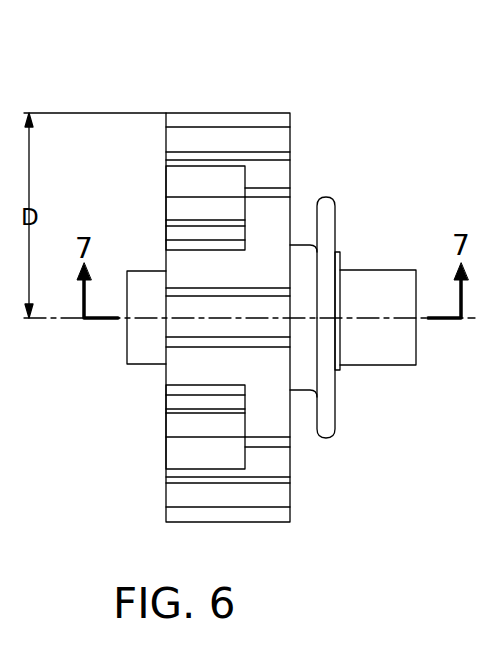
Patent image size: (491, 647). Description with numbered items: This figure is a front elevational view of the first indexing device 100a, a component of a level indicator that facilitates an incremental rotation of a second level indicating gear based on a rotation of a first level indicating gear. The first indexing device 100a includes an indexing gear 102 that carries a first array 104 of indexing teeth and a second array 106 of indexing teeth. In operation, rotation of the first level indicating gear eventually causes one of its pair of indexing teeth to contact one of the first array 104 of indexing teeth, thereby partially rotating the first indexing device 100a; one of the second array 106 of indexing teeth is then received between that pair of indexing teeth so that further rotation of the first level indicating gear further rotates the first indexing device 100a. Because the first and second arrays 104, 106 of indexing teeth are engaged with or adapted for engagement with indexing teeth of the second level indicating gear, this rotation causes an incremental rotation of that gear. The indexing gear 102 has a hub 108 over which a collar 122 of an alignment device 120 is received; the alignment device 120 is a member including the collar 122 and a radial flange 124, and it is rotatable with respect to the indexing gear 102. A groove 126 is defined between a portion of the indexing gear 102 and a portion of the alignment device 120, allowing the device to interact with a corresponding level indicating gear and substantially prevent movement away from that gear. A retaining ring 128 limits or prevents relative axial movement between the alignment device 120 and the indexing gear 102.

The first indexing device 100a is at (277, 90).
The indexing gear 102 is at (148, 462).
The first array of indexing teeth 104 is at (166, 186).
The second array of indexing teeth 106 is at (292, 117).
The hub 108 is at (146, 365).
The alignment device 120 is at (338, 451).
The collar 122 is at (297, 391).
The radial flange 124 is at (336, 421).
The groove 126 is at (306, 200).
The retaining ring 128 is at (340, 258).